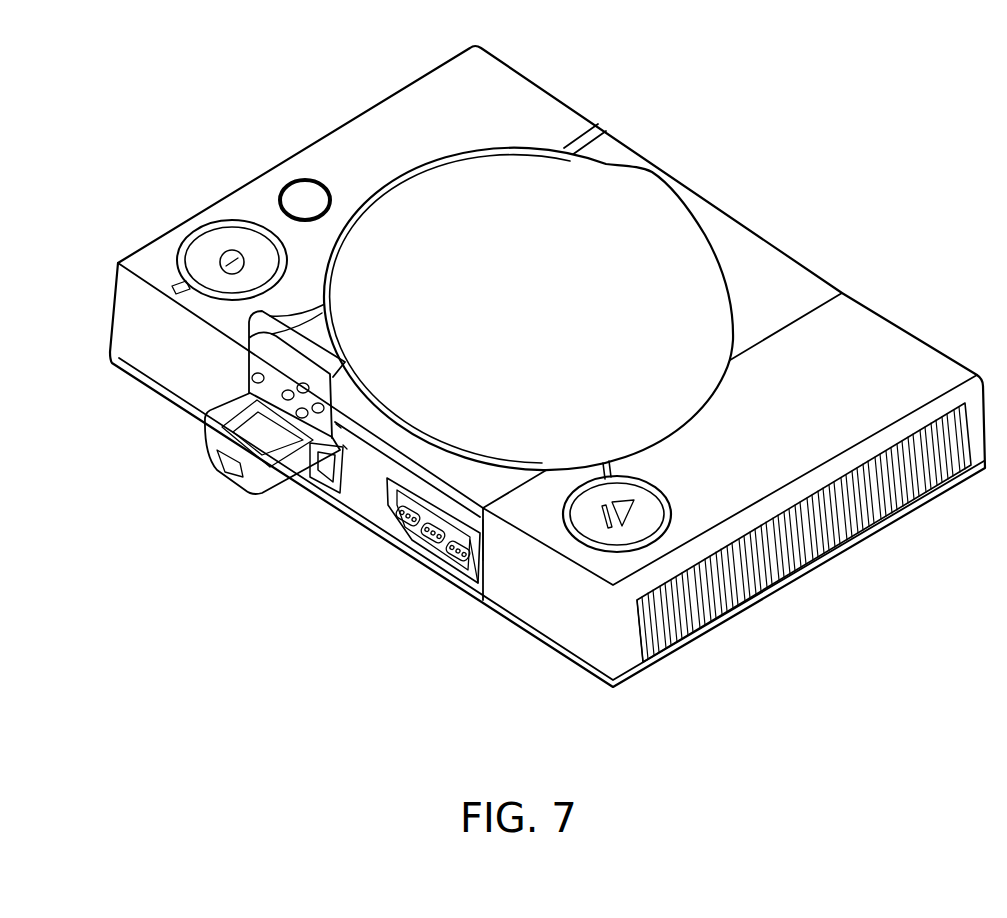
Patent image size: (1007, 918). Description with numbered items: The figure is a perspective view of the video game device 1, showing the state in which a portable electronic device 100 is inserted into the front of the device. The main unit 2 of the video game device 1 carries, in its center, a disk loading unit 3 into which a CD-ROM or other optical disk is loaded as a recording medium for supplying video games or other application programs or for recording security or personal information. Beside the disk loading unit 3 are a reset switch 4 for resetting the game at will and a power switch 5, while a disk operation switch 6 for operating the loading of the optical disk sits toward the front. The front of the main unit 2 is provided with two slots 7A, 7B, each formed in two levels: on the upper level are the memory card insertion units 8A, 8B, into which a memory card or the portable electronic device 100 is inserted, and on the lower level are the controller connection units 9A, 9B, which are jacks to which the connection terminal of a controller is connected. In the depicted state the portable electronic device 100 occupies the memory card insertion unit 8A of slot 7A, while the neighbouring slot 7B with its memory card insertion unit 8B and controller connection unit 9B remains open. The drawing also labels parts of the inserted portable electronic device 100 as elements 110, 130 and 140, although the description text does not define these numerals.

The video game device 1 is at (798, 167).
The main unit 2 is at (905, 355).
The disk loading unit 3 is at (620, 190).
The reset switch 4 is at (302, 195).
The power switch 5 is at (197, 250).
The disk operation switch 6 is at (652, 518).
The slot 7A is at (336, 426).
The slot 7B is at (424, 574).
The memory card insertion unit 8A is at (345, 447).
The memory card insertion unit 8B is at (490, 522).
The controller connection unit 9A is at (335, 516).
The controller connection unit 9B is at (468, 585).
The portable electronic device 100 is at (180, 452).
The controller adapter 110 is at (245, 355).
The plug window 130 is at (286, 465).
The plug tab 140 is at (225, 487).